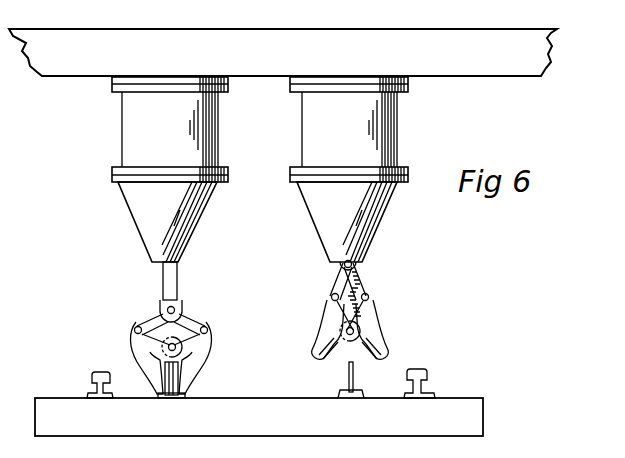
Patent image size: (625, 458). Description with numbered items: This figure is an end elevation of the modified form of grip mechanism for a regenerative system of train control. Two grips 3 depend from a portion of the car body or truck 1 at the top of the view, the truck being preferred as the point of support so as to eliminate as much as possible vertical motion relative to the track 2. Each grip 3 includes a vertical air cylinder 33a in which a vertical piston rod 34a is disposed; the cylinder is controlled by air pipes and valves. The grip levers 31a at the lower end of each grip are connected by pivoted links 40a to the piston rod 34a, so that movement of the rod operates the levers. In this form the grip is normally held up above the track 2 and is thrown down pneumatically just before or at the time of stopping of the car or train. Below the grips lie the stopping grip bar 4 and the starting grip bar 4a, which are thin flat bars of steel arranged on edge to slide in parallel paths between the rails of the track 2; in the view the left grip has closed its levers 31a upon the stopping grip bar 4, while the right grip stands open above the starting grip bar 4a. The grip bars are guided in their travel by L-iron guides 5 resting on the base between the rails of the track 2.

The car body or truck 1 is at (473, 60).
The vertical air cylinder 33a is at (145, 133).
The grip 3 is at (257, 222).
The vertical piston rod 34a is at (172, 288).
The pivoted links 40a is at (188, 321).
The grip levers 31a is at (387, 322).
The stopping grip bar 4 is at (172, 381).
The starting grip bar 4a is at (346, 376).
The track 2 is at (438, 370).
The L-iron guides 5 is at (160, 399).